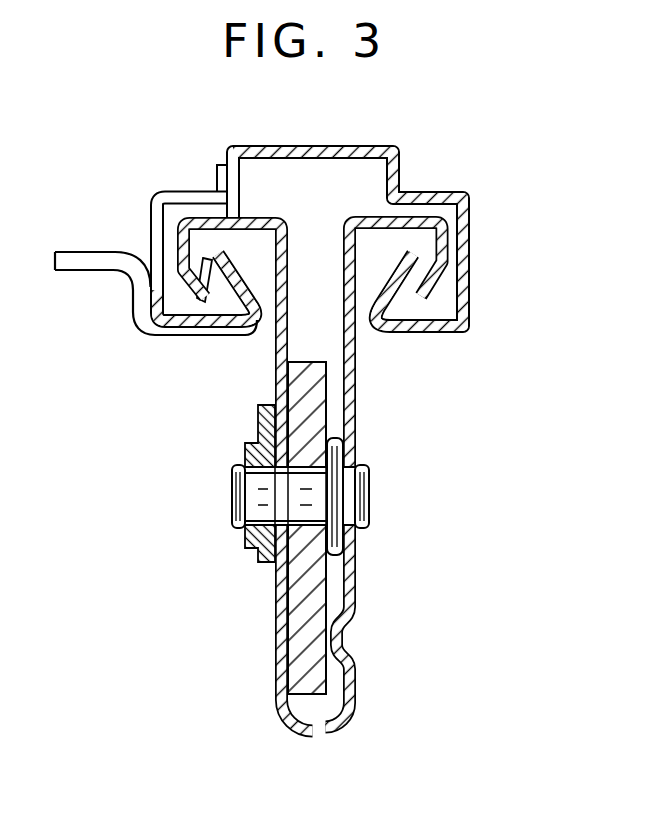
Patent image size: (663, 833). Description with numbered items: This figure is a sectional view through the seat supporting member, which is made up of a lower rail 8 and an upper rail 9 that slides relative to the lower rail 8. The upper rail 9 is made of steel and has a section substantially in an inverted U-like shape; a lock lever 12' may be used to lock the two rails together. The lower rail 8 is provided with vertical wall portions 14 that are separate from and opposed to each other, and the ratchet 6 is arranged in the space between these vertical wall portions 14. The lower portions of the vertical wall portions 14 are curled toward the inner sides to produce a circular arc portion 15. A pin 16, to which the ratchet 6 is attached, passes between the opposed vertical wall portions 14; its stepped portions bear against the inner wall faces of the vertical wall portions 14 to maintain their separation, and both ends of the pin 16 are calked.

The upper rail 9 is at (306, 146).
The lock lever 12' is at (156, 250).
The vertical wall portions 14 is at (275, 350).
The circular arc portion 15 is at (317, 741).
The ratchet 6 is at (322, 413).
The pin 16 is at (366, 507).
The lower rail 8 is at (222, 406).